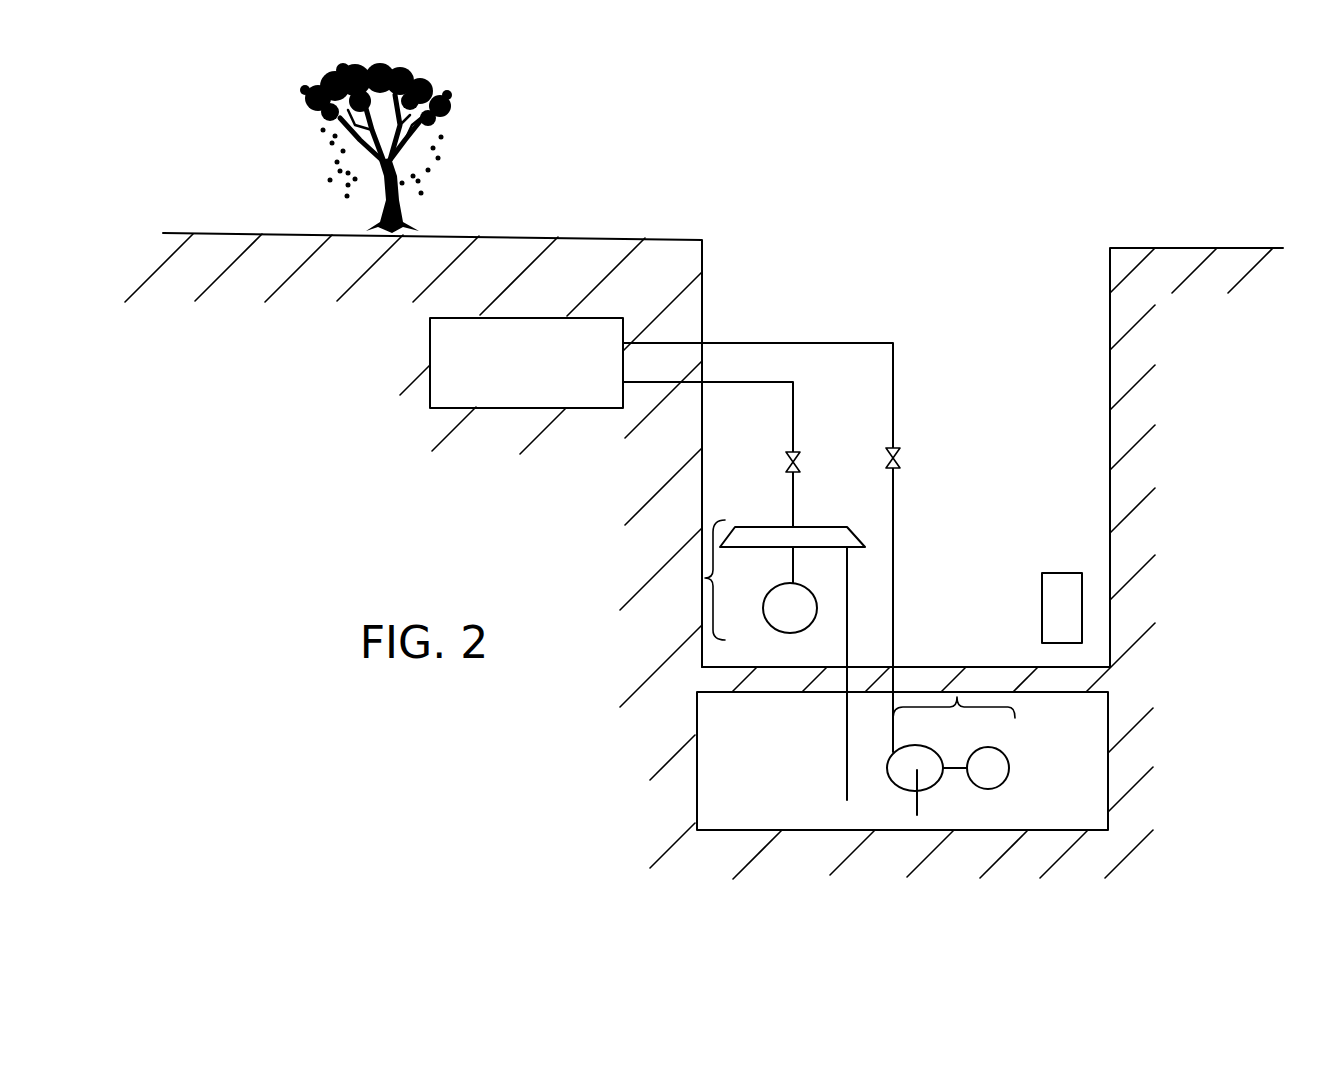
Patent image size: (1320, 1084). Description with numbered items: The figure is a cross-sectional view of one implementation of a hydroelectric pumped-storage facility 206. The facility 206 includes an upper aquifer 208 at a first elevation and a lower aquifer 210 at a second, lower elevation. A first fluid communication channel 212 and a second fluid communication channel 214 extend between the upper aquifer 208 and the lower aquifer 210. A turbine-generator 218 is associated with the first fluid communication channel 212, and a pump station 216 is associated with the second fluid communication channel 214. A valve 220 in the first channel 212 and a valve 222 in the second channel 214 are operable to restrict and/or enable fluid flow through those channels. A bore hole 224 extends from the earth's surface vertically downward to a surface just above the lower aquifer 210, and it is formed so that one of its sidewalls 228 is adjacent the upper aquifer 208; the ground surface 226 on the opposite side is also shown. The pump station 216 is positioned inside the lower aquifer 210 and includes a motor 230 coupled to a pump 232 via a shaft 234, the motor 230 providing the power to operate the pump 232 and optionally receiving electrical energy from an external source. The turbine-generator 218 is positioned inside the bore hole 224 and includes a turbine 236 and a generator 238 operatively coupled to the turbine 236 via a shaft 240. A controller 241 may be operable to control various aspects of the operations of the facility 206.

The hydroelectric pumped-storage facility 206 is at (318, 368).
The upper aquifer 208 is at (503, 384).
The lower aquifer 210 is at (1036, 796).
The first fluid communication channel 212 is at (793, 389).
The second fluid communication channel 214 is at (893, 372).
The pump station 216 is at (976, 709).
The turbine-generator 218 is at (736, 575).
The valve 220 is at (786, 462).
The valve 222 is at (889, 460).
The bore hole 224 is at (985, 218).
The ground surface 226 is at (1195, 248).
The sidewall 228 is at (705, 264).
The motor 230 is at (1000, 751).
The pump 232 is at (937, 754).
The shaft 234 is at (955, 774).
The turbine 236 is at (782, 526).
The generator 238 is at (772, 615).
The shaft 240 is at (790, 566).
The controller 241 is at (1065, 582).